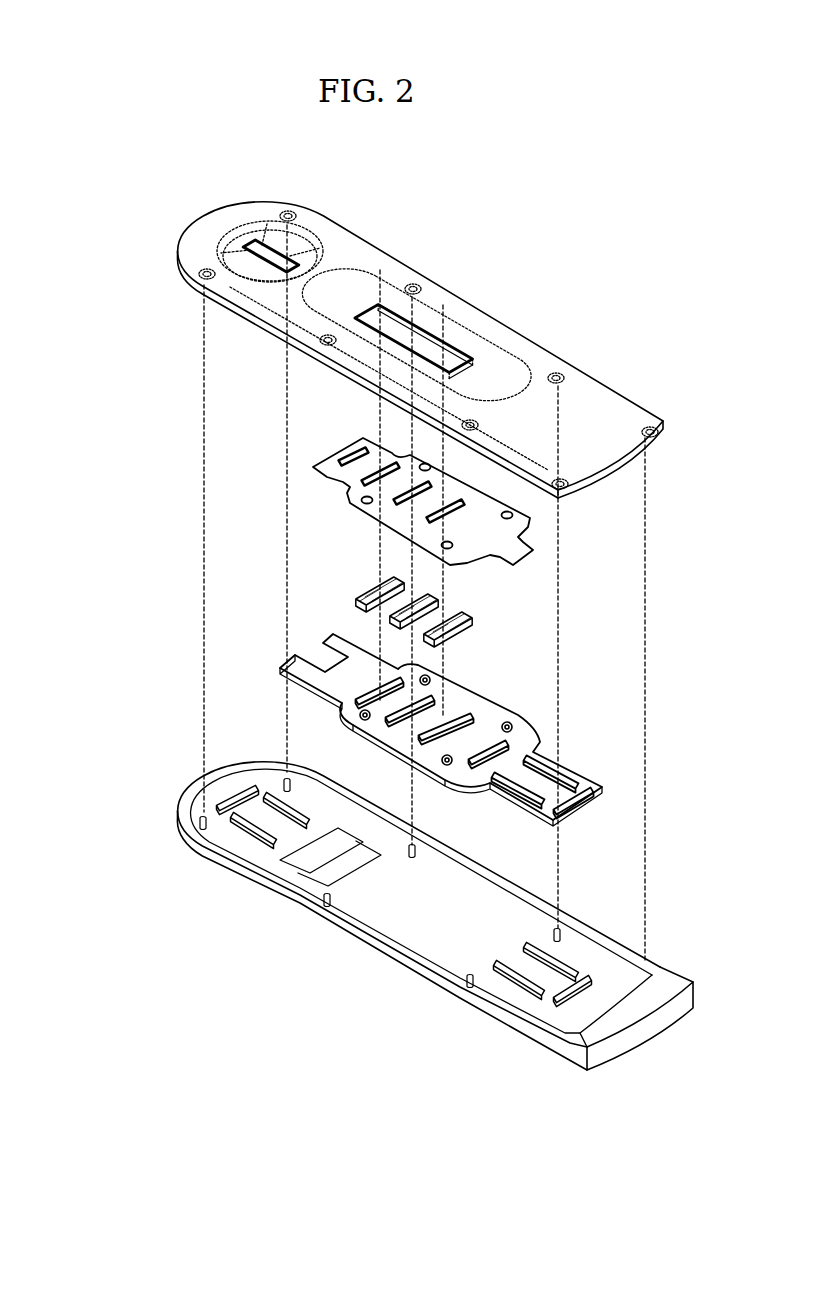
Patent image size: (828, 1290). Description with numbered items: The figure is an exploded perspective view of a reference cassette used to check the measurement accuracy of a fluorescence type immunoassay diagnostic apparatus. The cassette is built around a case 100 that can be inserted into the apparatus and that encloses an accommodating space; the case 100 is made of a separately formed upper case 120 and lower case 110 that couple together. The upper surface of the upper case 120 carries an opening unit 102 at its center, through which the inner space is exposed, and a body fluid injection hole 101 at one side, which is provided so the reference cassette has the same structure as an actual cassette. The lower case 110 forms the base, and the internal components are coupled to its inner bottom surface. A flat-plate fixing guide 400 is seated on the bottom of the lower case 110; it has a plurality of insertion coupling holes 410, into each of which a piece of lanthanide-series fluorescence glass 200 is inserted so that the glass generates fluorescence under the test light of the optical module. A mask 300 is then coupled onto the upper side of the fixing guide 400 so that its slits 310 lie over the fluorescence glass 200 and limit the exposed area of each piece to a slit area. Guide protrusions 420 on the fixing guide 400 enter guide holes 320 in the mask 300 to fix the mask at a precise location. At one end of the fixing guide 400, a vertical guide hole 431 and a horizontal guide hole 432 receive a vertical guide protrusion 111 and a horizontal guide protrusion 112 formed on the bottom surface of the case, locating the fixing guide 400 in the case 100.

The case 100 is at (95, 802).
The upper case 120 is at (190, 236).
The body fluid injection hole 101 is at (262, 246).
The opening unit 102 is at (422, 338).
The mask 300 is at (528, 524).
The slits 310 is at (377, 473).
The guide holes 320 is at (355, 502).
The fluorescence glass 200 is at (364, 588).
The fixing guide 400 is at (483, 707).
The insertion coupling holes 410 is at (365, 706).
The guide protrusions 420 is at (522, 718).
The vertical guide hole 431 is at (560, 777).
The horizontal guide hole 432 is at (583, 808).
The lower case 110 is at (195, 787).
The vertical guide protrusion 111 is at (510, 982).
The horizontal guide protrusion 112 is at (555, 1005).